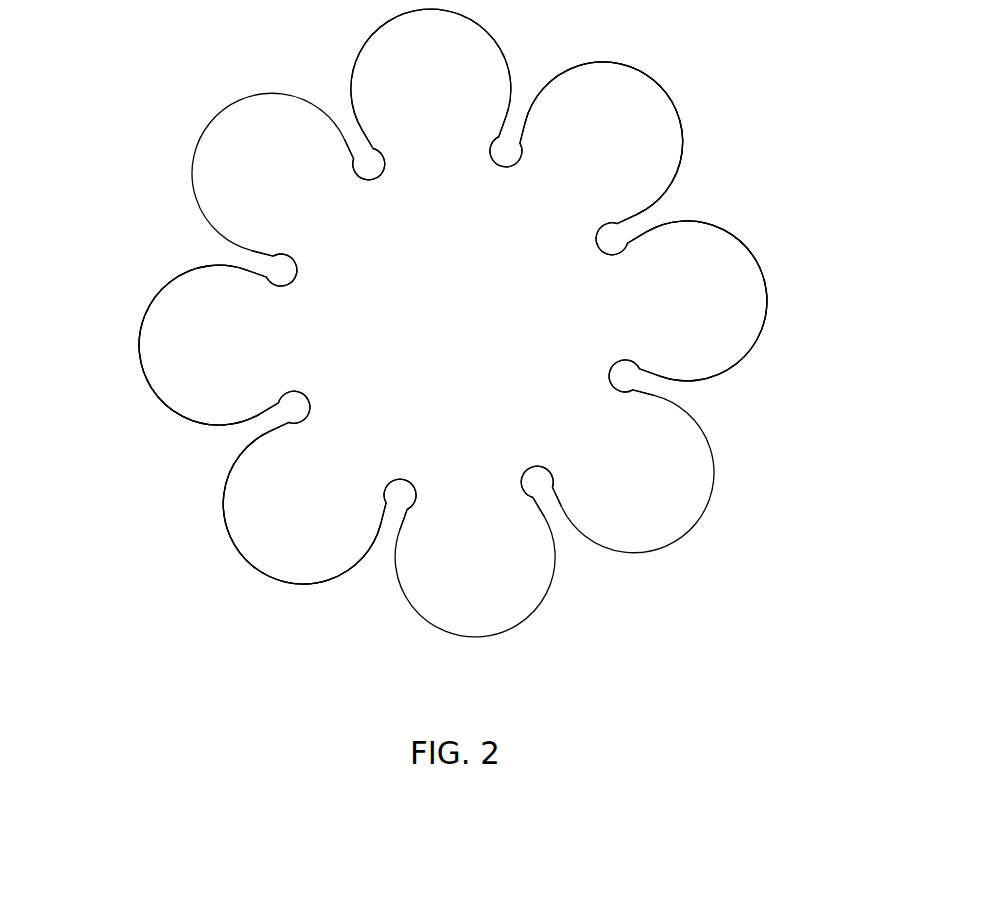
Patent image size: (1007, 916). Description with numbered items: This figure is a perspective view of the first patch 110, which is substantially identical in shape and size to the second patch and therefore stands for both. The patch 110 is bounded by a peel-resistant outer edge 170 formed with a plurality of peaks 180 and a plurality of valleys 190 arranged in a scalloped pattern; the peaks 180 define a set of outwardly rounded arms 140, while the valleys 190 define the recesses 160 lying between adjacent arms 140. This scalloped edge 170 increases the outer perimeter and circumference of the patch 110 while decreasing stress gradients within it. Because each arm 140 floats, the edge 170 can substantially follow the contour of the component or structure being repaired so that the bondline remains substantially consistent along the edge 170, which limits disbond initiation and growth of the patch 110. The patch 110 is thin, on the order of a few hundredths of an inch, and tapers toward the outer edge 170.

The first patch 110 is at (744, 575).
The arm 140 is at (476, 58).
The recess 160 is at (516, 155).
The outer edge 170 is at (752, 246).
The peak 180 is at (714, 141).
The valley 190 is at (352, 150).